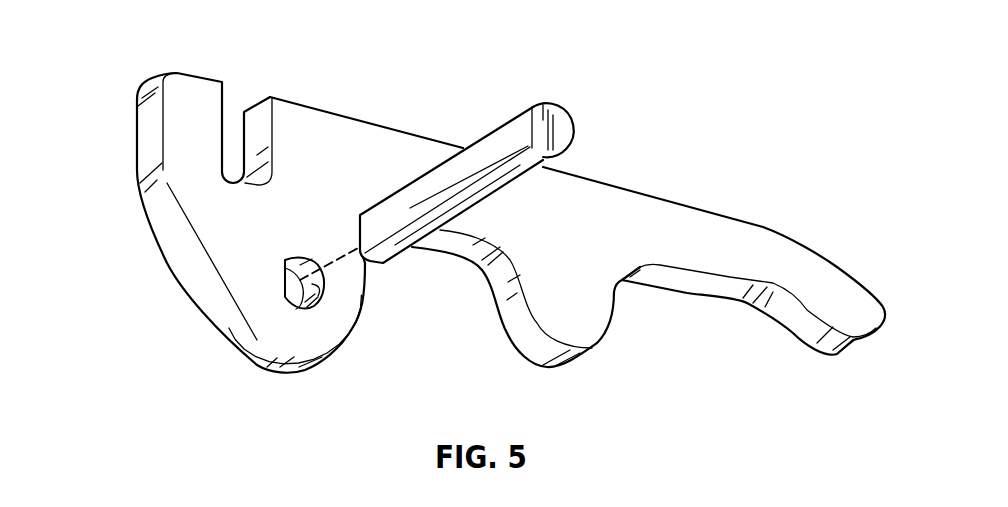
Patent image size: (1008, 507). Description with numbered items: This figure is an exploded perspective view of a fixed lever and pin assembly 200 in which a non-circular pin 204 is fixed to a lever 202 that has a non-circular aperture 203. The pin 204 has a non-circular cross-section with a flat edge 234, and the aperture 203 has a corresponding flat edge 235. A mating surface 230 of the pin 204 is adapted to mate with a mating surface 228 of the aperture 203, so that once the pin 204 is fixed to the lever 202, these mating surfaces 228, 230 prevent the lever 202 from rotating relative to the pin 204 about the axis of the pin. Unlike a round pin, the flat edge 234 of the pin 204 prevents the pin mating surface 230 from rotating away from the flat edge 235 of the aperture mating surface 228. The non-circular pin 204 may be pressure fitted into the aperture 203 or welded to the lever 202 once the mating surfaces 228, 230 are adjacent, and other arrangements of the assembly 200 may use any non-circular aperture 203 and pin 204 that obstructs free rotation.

The fixed lever and pin assembly 200 is at (98, 81).
The lever 202 is at (687, 215).
The non-circular aperture 203 is at (318, 262).
The non-circular pin 204 is at (563, 128).
The mating surface of the aperture 228 is at (353, 327).
The mating surface of the pin 230 is at (407, 238).
The flat edge of the pin 234 is at (482, 148).
The flat edge of the aperture 235 is at (285, 276).